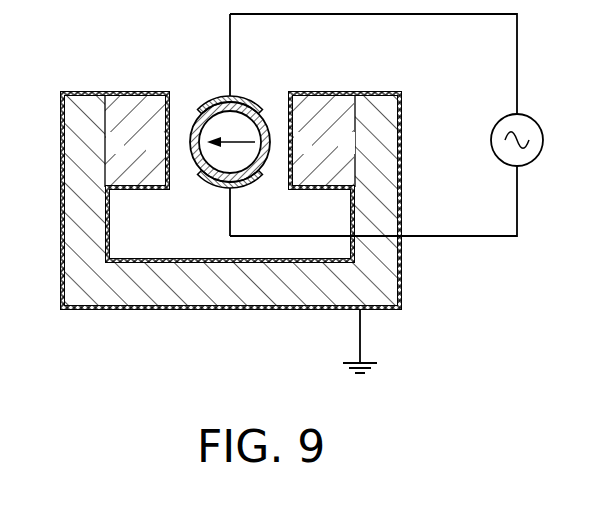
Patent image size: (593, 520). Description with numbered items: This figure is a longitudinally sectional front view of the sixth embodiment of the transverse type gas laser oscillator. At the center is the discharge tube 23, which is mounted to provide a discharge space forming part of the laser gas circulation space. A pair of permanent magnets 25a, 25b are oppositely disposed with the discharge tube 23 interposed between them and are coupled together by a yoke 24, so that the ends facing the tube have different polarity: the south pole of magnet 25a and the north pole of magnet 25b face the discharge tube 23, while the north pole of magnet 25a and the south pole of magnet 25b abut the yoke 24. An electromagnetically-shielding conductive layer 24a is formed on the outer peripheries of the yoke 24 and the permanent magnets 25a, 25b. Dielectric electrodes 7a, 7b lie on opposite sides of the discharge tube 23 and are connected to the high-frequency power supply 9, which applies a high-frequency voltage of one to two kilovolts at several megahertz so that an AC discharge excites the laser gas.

The yoke 24 is at (75, 228).
The electromagnetically-shielding conductive layer 24a is at (270, 312).
The permanent magnet 25a is at (128, 100).
The permanent magnet 25b is at (340, 100).
The discharge tube 23 is at (186, 115).
The dielectric electrode 7a is at (250, 98).
The dielectric electrode 7b is at (212, 183).
The high-frequency power supply 9 is at (545, 128).